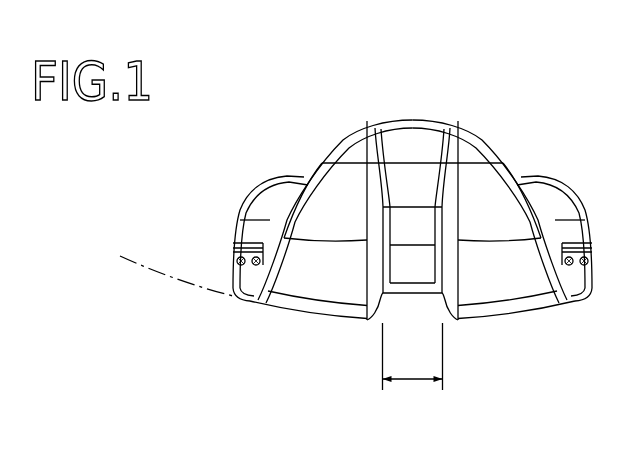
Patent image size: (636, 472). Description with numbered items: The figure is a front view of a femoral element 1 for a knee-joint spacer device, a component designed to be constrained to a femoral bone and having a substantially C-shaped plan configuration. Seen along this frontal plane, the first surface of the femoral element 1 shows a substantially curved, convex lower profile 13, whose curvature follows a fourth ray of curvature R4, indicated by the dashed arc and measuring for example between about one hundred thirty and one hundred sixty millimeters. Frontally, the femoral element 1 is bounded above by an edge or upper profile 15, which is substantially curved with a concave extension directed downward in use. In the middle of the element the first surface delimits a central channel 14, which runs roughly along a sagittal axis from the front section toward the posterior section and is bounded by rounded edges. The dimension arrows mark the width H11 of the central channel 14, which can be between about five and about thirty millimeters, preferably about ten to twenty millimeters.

The femoral element 1 is at (146, 163).
The lower profile 13 is at (307, 316).
The central channel 14 is at (412, 314).
The upper profile 15 is at (459, 124).
The fourth ray of curvature R4 is at (198, 292).
The width of the central channel H11 is at (407, 383).